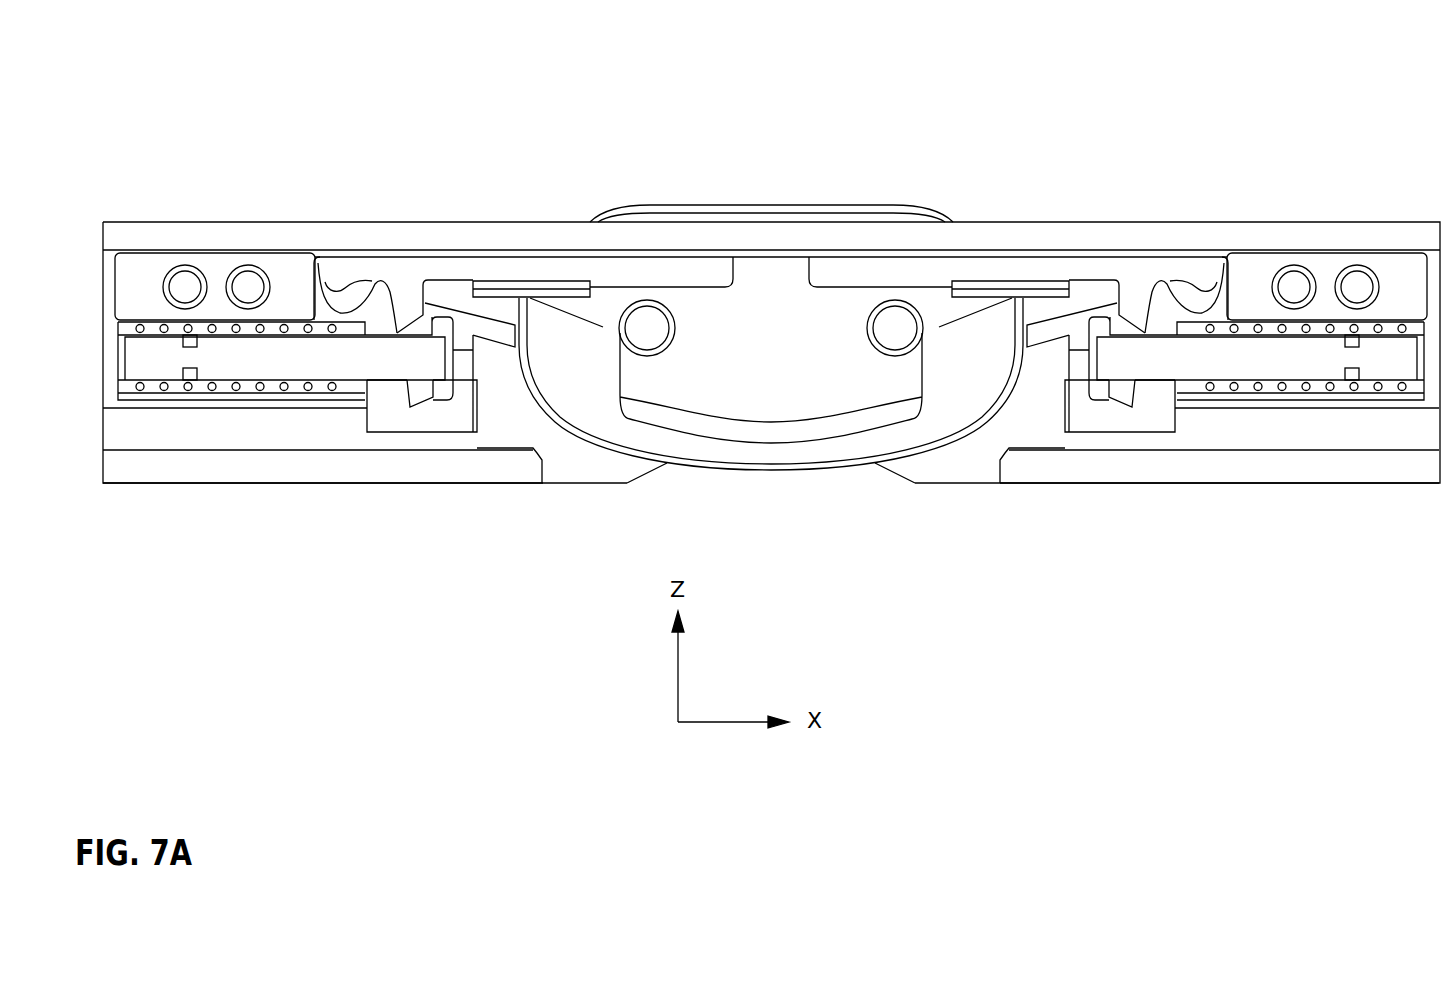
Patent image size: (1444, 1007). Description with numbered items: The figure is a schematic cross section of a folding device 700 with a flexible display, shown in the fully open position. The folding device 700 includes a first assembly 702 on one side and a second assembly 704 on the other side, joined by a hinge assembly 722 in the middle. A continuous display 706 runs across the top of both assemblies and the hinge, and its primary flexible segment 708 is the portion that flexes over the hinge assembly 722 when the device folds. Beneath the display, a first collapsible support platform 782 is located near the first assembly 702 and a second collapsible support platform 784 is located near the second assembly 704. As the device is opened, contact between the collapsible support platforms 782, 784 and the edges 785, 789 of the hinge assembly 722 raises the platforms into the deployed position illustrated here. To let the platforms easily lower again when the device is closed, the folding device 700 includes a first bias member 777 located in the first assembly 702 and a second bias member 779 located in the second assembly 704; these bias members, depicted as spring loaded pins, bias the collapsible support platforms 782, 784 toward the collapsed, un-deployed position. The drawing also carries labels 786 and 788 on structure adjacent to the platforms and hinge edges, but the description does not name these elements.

The folding device 700 is at (1285, 114).
The first assembly 702 is at (253, 470).
The second assembly 704 is at (1232, 472).
The continuous display 706 is at (190, 232).
The primary flexible segment 708 is at (689, 174).
The hinge assembly 722 is at (777, 460).
The first bias member 777 is at (326, 406).
The second bias member 779 is at (1208, 404).
The first collapsible support platform 782 is at (385, 268).
The second collapsible support platform 784 is at (1173, 265).
The edge of hinge assembly 785 is at (528, 280).
The flexure arm 786 is at (488, 300).
The flexure arm 788 is at (1057, 292).
The edge of hinge assembly 789 is at (1015, 283).